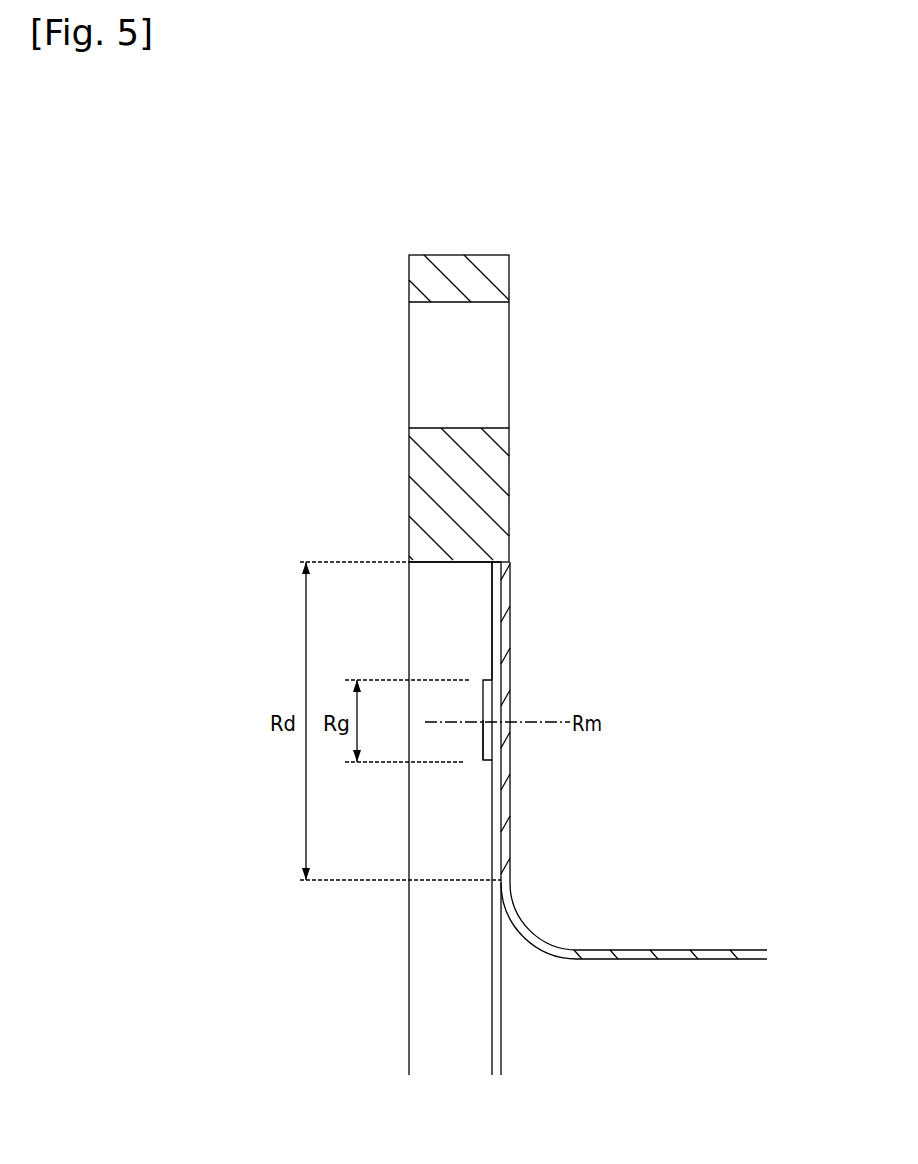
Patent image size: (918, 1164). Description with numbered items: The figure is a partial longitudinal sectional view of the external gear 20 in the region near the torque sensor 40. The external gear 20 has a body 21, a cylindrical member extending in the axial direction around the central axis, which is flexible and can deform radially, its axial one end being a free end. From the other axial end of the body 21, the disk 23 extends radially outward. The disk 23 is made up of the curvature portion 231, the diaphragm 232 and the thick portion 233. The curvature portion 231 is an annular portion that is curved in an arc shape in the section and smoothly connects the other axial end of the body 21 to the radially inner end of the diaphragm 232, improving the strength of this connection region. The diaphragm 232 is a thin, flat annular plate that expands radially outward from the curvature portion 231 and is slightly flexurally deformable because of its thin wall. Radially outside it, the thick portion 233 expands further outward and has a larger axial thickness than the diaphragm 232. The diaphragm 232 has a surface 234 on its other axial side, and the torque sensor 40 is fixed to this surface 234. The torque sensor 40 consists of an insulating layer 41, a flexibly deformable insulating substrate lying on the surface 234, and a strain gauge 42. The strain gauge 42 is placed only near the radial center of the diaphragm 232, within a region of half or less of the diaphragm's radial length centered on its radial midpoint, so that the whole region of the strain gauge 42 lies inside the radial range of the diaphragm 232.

The external gear 20 is at (704, 936).
The body 21 is at (716, 957).
The disk 23 is at (522, 587).
The curvature portion 231 is at (530, 930).
The diaphragm 232 is at (504, 784).
The thick portion 233 is at (455, 468).
The surface 234 is at (497, 832).
The torque sensor 40 is at (468, 700).
The insulating layer 41 is at (492, 605).
The strain gauge 42 is at (483, 740).